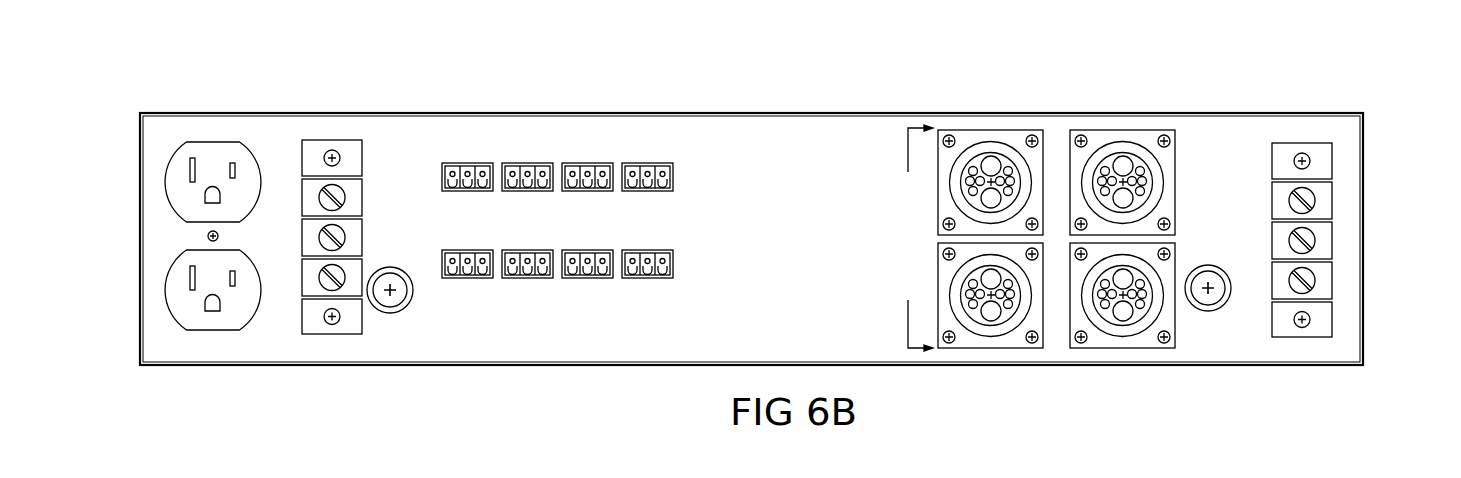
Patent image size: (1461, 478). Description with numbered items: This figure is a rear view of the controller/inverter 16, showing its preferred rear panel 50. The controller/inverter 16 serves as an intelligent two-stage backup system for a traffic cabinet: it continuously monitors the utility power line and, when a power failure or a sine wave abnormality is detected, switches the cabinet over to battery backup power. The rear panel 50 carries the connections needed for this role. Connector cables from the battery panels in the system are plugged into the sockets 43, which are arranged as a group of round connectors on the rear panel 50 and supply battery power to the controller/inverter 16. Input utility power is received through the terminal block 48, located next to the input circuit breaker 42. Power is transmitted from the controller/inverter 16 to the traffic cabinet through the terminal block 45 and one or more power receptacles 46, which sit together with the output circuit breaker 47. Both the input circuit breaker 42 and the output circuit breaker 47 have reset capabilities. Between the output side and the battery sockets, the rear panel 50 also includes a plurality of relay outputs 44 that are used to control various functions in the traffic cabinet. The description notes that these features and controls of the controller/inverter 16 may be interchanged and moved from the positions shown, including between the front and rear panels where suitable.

The controller/inverter 16 is at (672, 112).
The rear panel 50 is at (791, 142).
The power receptacles 46 is at (205, 154).
The terminal block 45 is at (345, 151).
The relay outputs 44 is at (462, 162).
The output circuit breaker 47 is at (412, 308).
The sockets 43 is at (1139, 133).
The terminal block 48 is at (1330, 158).
The input circuit breaker 42 is at (1232, 307).